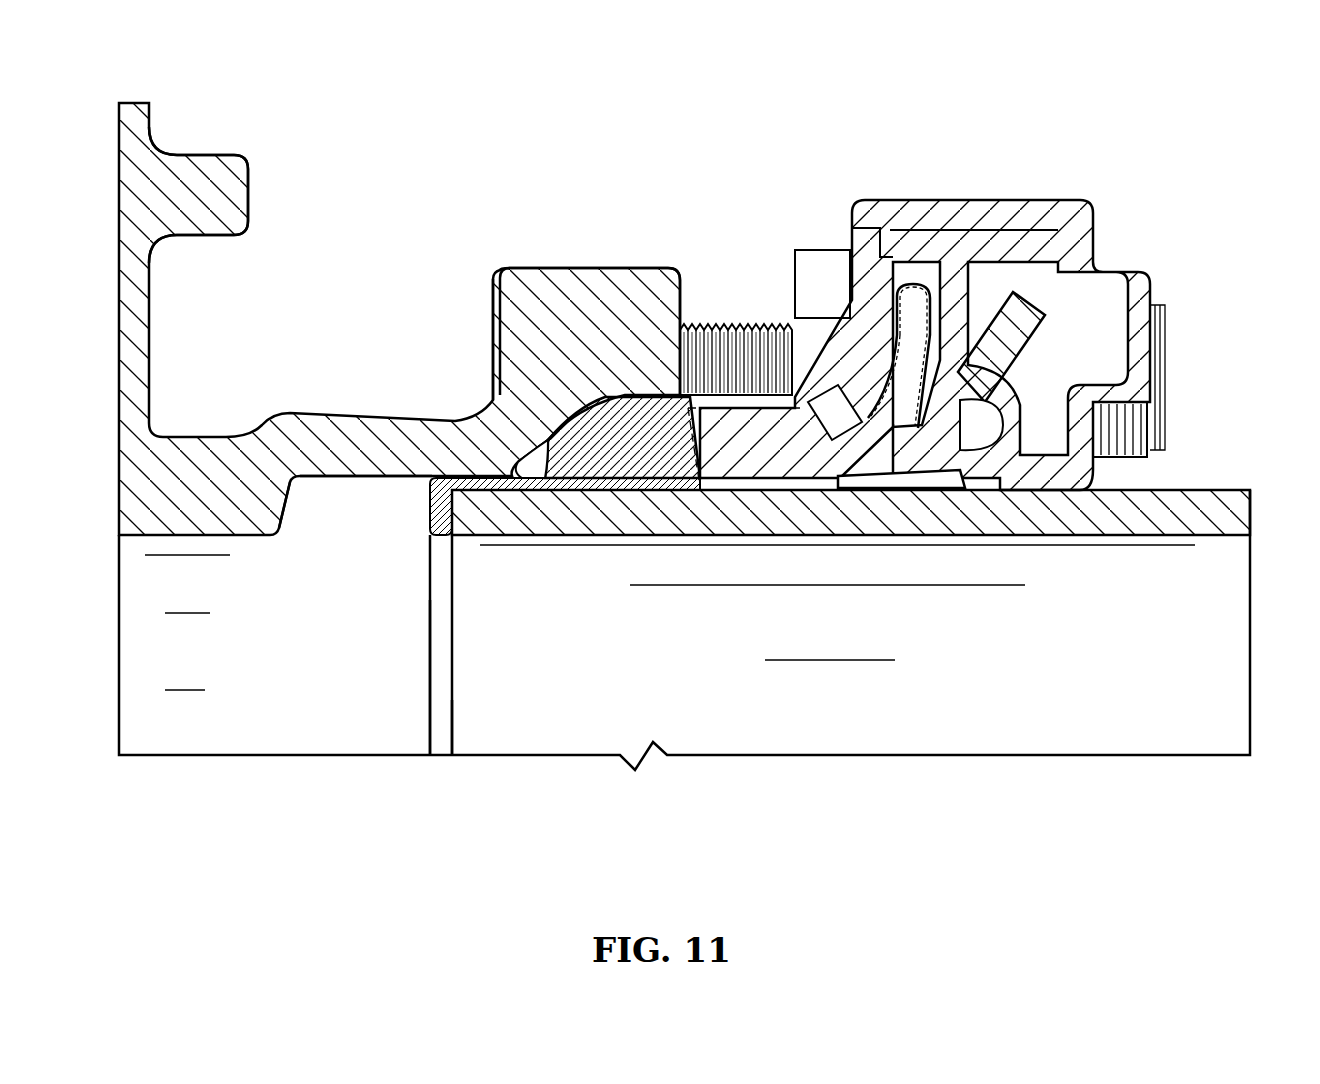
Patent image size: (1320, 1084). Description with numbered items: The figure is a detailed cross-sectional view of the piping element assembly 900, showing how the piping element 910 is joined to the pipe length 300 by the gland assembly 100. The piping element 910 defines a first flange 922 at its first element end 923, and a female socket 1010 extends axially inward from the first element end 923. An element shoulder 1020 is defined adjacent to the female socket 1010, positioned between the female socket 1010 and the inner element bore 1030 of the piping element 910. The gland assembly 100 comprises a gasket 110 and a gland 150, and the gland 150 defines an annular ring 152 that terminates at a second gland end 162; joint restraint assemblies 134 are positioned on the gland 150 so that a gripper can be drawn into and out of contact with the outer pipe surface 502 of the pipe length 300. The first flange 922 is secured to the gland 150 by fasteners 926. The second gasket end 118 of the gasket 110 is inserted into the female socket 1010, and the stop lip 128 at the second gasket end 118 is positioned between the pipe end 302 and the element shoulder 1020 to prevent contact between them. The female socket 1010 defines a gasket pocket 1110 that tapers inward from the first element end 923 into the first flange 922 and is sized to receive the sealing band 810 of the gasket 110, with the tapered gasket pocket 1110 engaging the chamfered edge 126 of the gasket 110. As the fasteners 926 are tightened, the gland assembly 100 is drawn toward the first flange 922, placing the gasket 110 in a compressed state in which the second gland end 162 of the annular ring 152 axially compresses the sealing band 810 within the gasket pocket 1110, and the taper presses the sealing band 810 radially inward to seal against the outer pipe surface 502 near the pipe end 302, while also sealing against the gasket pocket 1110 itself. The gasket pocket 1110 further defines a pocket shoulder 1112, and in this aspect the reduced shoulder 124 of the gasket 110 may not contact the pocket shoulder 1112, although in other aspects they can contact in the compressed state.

The gland assembly 100 is at (1168, 128).
The gasket 110 is at (578, 388).
The second gasket end 118 is at (430, 705).
The reduced shoulder 124 is at (523, 460).
The chamfered edge 126 is at (540, 450).
The stop lip 128 is at (443, 740).
The joint restraint assembly 134 is at (1023, 318).
The gland 150 is at (862, 272).
The annular ring 152 is at (738, 470).
The second gland end 162 is at (695, 490).
The pipe length 300 is at (523, 720).
The pipe end 302 is at (436, 680).
The outer pipe surface 502 is at (1201, 484).
The sealing band 810 is at (617, 470).
The piping element assembly 900 is at (377, 108).
The piping element 910 is at (222, 190).
The first flange 922 is at (555, 290).
The first element end 923 is at (683, 300).
The fasteners 926 is at (713, 323).
The female socket 1010 is at (362, 475).
The element shoulder 1020 is at (286, 505).
The inner element bore 1030 is at (170, 537).
The gasket pocket 1110 is at (570, 485).
The pocket shoulder 1112 is at (545, 470).